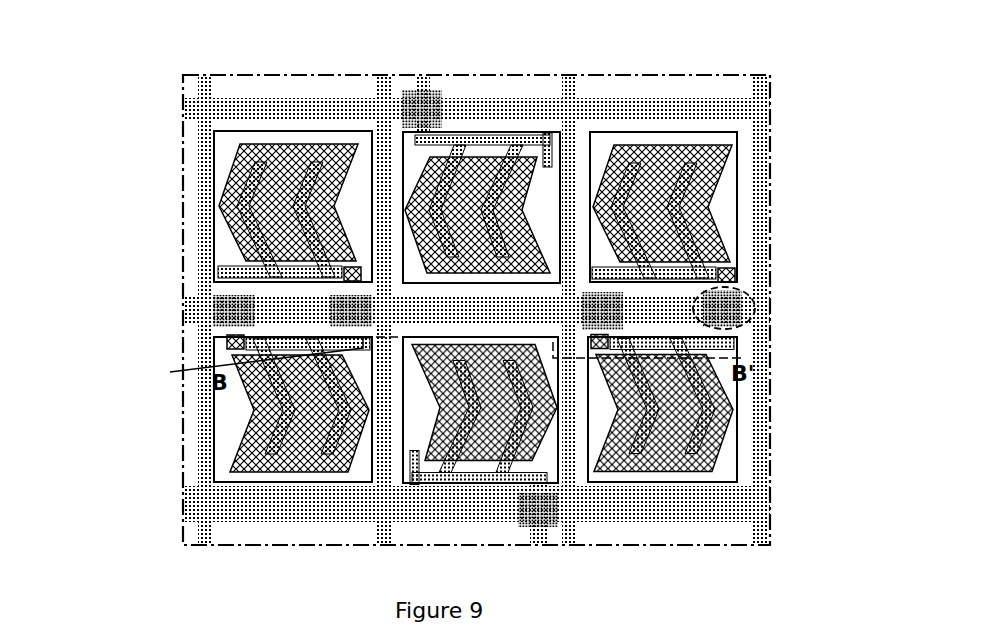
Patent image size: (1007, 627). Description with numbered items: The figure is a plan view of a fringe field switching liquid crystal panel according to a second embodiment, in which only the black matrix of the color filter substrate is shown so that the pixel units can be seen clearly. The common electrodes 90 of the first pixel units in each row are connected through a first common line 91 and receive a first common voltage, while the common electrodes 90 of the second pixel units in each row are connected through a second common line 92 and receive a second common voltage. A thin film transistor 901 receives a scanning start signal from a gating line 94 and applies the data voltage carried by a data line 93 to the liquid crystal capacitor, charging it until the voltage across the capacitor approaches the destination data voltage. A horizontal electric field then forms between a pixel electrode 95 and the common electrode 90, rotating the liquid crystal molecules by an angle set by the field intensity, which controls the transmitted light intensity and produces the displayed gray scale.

The common electrode 90 is at (660, 185).
The first common line 91 is at (220, 262).
The second common line 92 is at (170, 372).
The data line 93 is at (757, 235).
The gating line 94 is at (722, 108).
The pixel electrode 95 is at (673, 217).
The thin film transistor 901 is at (753, 292).